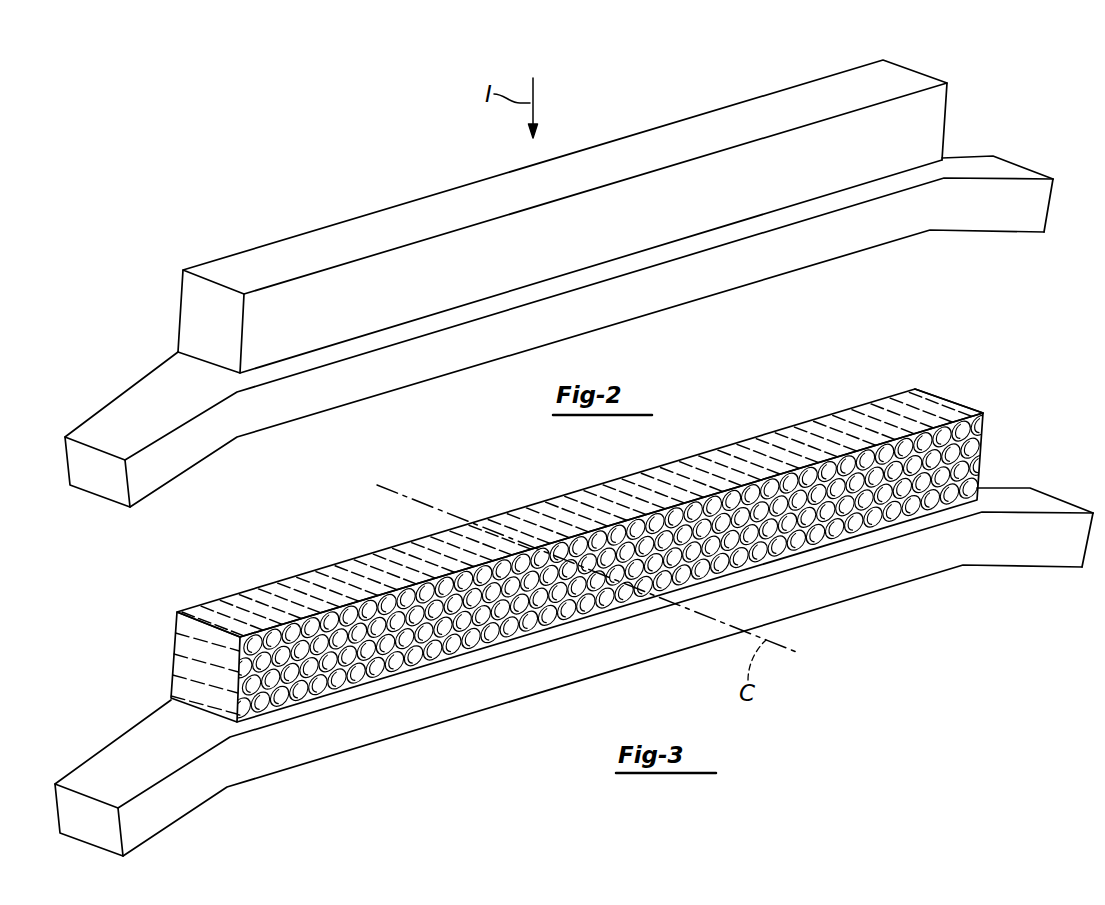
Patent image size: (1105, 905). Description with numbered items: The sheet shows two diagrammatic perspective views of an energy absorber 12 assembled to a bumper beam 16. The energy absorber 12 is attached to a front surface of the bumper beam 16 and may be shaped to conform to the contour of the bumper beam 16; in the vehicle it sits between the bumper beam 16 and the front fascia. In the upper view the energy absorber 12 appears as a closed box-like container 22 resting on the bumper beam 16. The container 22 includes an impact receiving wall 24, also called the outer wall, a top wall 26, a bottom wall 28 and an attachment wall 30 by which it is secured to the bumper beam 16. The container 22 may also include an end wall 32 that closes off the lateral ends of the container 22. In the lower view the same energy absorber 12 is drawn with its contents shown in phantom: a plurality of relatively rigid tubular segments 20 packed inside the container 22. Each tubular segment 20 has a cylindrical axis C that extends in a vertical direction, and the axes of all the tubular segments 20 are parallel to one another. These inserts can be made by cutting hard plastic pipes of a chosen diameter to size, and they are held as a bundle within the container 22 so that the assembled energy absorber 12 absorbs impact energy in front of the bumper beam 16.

In FIG. 2, the energy absorber 12 is at (557, 219).
In FIG. 3, the energy absorber 12 is at (580, 538).
In FIG. 2, the bumper beam 16 is at (845, 226).
In FIG. 3, the bumper beam 16 is at (885, 560).
In FIG. 3, the tubular segments 20 is at (787, 442).
In FIG. 3, the container 22 is at (923, 395).
In FIG. 2, the impact receiving wall 24 is at (663, 152).
In FIG. 2, the top wall 26 is at (917, 133).
In FIG. 2, the bottom wall 28 is at (179, 315).
In FIG. 2, the attachment wall 30 is at (200, 360).
In FIG. 2, the end wall 32 is at (222, 338).